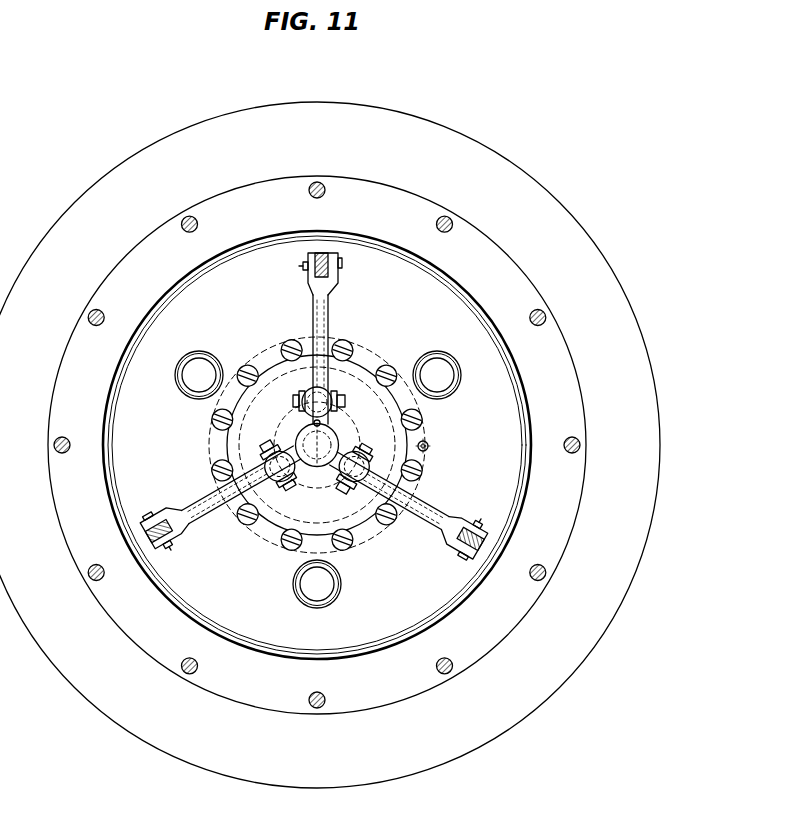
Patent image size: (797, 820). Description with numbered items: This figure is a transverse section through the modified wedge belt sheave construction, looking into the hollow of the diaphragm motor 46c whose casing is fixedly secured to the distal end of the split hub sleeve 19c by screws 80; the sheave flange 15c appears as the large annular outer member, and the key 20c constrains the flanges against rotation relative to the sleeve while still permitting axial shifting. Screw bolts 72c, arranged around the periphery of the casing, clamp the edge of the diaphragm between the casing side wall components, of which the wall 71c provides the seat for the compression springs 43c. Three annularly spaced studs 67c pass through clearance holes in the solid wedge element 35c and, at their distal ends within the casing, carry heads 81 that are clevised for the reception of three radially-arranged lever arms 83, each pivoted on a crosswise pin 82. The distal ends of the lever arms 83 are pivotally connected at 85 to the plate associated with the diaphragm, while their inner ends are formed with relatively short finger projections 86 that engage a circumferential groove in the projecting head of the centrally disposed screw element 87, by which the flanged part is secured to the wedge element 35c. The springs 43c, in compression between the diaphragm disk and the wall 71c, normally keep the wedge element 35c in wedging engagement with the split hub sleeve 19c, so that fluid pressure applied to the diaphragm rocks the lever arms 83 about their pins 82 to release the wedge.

The sheave flange 15c is at (323, 101).
The diaphragm motor 46c is at (362, 163).
The wall of motor casing 71c is at (373, 257).
The screw bolts 72c is at (450, 232).
The springs 43c is at (205, 343).
The split hub sleeve 19c is at (267, 352).
The wedge element 35c is at (356, 369).
The studs 67c is at (298, 437).
The screws 80 is at (214, 422).
The key 20c is at (433, 447).
The finger projections 86 is at (318, 468).
The heads of studs 81 is at (339, 398).
The crosswise pins 82 is at (293, 401).
The screw element 87 is at (336, 440).
The lever arms 83 is at (313, 305).
The pivotal connections 85 is at (304, 266).